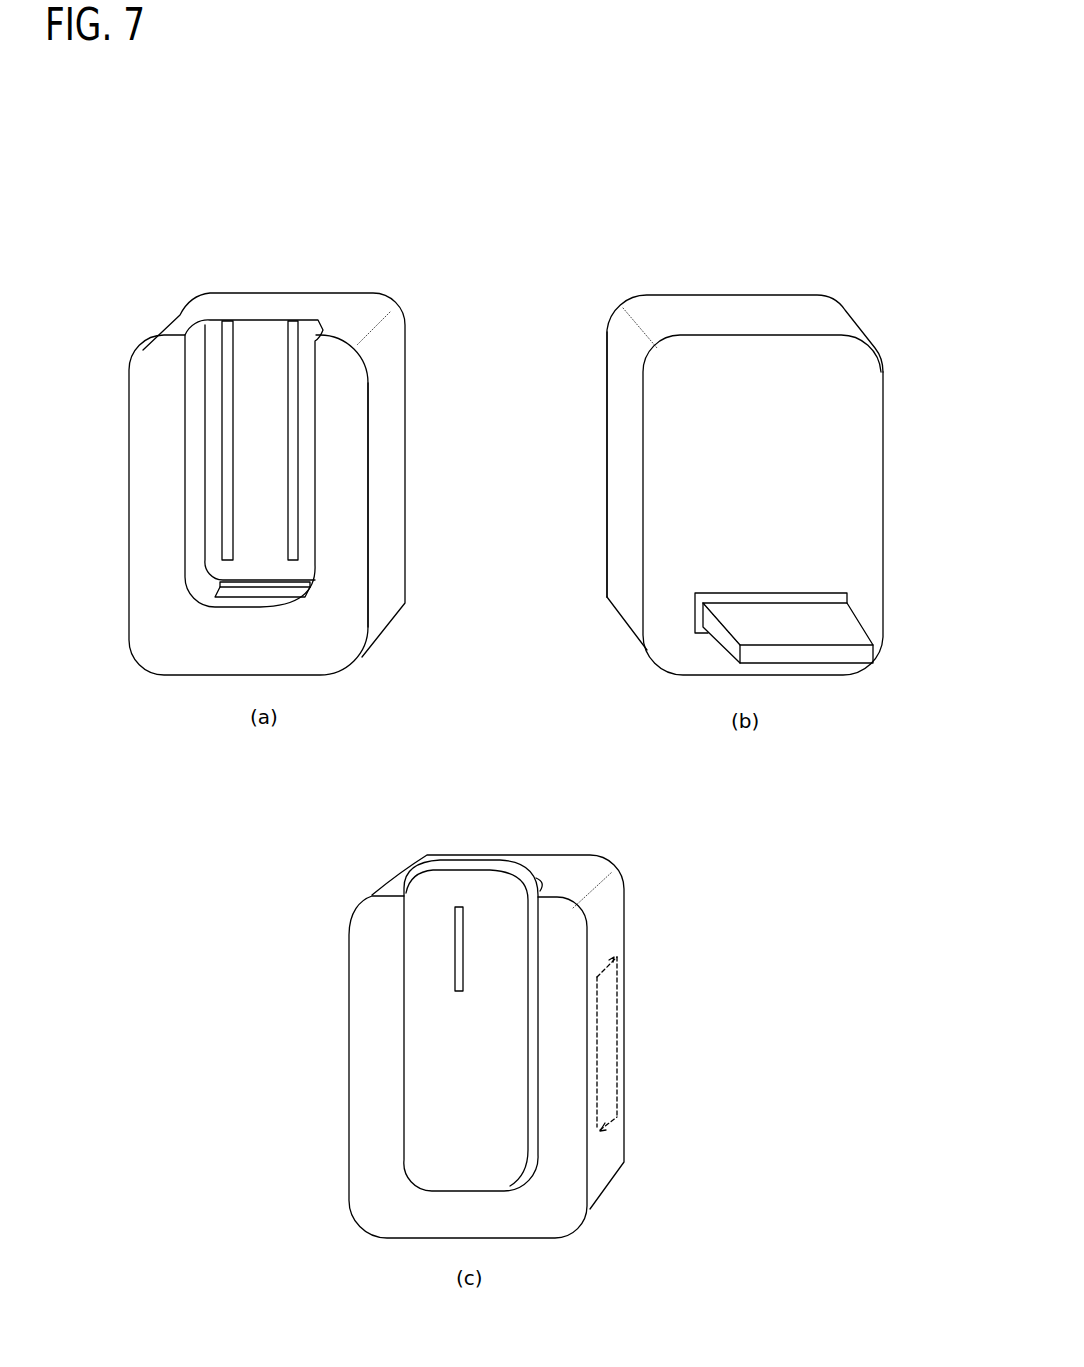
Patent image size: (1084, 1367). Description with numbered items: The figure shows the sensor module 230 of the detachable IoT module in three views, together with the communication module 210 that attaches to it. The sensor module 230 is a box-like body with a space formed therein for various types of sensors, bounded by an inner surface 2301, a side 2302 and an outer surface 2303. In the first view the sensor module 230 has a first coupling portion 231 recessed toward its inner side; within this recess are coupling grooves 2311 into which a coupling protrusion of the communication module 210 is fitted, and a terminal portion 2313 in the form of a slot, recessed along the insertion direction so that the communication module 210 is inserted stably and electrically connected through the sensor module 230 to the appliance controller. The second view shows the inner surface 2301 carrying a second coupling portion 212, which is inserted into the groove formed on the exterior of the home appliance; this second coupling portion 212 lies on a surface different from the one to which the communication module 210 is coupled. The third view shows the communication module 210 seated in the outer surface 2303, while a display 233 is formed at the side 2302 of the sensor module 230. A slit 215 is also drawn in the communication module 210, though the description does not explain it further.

The sensor module 230 is at (409, 290).
The inner surface 2301 is at (853, 473).
The side 2302 is at (388, 474).
The outer surface 2303 is at (145, 512).
The first coupling portion 231 is at (258, 448).
The coupling groove 2311 is at (230, 322).
The terminal portion 2313 is at (257, 595).
The second coupling portion 212 is at (828, 637).
The communication module 210 is at (417, 1091).
The slit 215 is at (451, 925).
The display 233 is at (607, 1050).